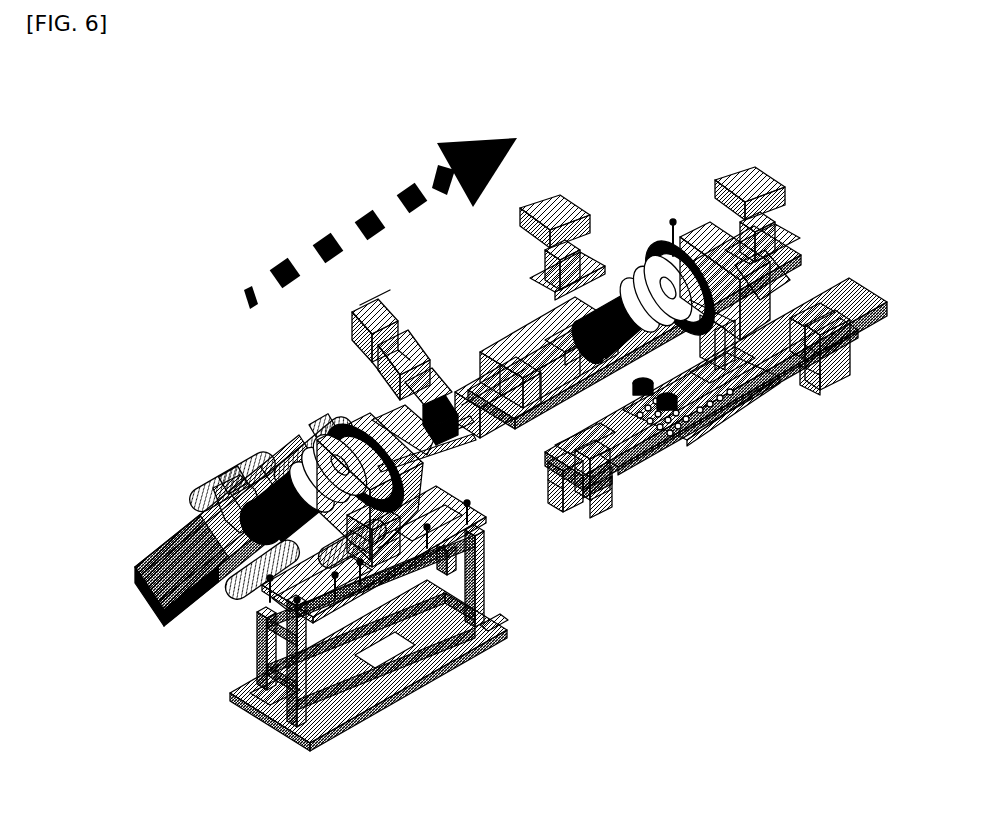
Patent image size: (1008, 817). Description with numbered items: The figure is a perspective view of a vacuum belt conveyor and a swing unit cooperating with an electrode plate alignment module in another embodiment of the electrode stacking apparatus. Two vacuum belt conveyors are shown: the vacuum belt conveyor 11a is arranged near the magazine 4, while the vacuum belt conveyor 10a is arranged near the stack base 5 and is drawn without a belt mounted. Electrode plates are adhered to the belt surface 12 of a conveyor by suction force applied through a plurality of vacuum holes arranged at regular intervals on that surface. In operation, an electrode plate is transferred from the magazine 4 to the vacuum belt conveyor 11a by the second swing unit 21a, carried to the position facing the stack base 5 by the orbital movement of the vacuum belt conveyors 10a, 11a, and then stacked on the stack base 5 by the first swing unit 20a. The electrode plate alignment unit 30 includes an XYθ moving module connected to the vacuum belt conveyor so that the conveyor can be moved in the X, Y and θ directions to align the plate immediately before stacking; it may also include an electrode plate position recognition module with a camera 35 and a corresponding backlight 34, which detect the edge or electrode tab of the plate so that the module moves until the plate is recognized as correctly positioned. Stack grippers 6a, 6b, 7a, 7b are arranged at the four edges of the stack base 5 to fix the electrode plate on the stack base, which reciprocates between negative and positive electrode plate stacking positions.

The magazine 4 is at (500, 574).
The stack base 5 is at (732, 429).
The stack gripper 6a is at (624, 452).
The stack gripper 6b is at (832, 368).
The stack gripper 7a is at (601, 474).
The stack gripper 7b is at (787, 327).
The vacuum belt conveyor 10a is at (465, 376).
The vacuum belt conveyor 11a is at (142, 599).
The belt surface 12 is at (187, 560).
The first swing unit 20a is at (770, 287).
The second swing unit 21a is at (442, 471).
The electrode plate alignment unit 30 is at (474, 328).
The backlight 34 is at (516, 345).
The camera 35 is at (602, 268).